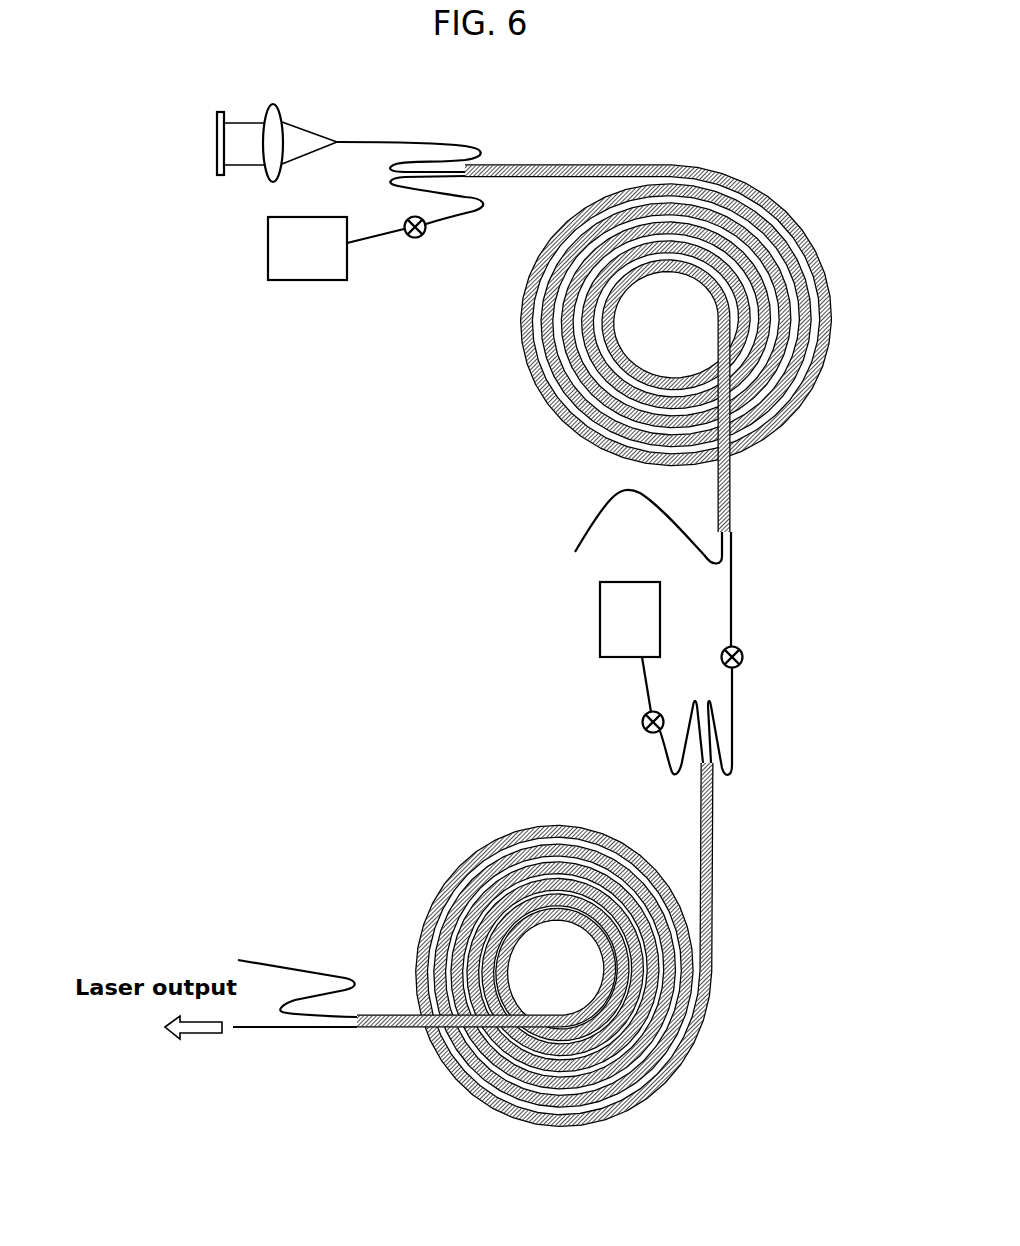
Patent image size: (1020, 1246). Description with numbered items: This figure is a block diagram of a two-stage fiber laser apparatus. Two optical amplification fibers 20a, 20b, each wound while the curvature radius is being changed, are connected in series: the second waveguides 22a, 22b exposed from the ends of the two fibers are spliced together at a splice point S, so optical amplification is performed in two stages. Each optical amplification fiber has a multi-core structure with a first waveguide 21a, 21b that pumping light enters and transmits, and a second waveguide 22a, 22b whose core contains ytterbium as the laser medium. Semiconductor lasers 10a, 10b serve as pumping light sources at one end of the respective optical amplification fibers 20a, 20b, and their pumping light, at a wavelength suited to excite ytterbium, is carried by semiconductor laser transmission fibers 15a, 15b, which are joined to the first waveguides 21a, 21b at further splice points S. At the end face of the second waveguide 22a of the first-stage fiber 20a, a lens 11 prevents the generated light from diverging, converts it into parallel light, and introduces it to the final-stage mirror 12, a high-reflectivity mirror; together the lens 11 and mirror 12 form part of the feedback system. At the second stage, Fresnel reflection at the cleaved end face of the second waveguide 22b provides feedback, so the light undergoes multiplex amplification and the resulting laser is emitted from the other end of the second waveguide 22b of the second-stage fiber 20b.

The lens 11 is at (274, 115).
The final-stage mirror 12 is at (216, 140).
The semiconductor laser 10a is at (268, 248).
The semiconductor laser 10b is at (600, 613).
The semiconductor laser transmission fiber 15a is at (385, 236).
The semiconductor laser transmission fiber 15b is at (645, 678).
The optical amplification fiber 20a is at (800, 217).
The optical amplification fiber 20b is at (706, 1035).
The first waveguide 21a is at (457, 222).
The first waveguide 21b is at (668, 764).
The second waveguide 22a is at (397, 141).
The second waveguide 22b is at (734, 727).
The fusion splice point S is at (418, 238).